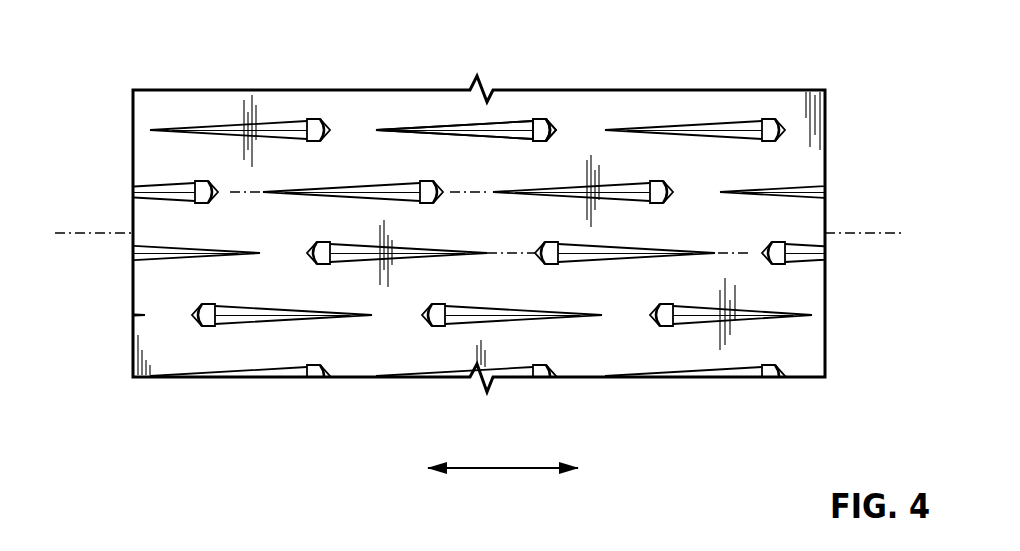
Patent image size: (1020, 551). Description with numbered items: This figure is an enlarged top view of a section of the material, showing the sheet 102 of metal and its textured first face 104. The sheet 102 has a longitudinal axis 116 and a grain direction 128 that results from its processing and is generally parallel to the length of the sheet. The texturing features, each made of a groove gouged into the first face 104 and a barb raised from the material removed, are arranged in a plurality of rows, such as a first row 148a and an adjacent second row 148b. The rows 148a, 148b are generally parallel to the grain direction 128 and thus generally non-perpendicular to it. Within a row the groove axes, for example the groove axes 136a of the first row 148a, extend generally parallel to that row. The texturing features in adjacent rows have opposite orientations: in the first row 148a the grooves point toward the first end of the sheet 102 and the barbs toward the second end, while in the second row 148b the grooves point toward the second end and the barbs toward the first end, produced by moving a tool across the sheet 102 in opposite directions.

The sheet of metal 102 is at (803, 150).
The first face 104 is at (805, 290).
The longitudinal axis 116 is at (110, 232).
The grain direction 128 is at (500, 472).
The groove axis of the first row 136a is at (240, 190).
The first row 148a is at (680, 190).
The second row 148b is at (302, 253).